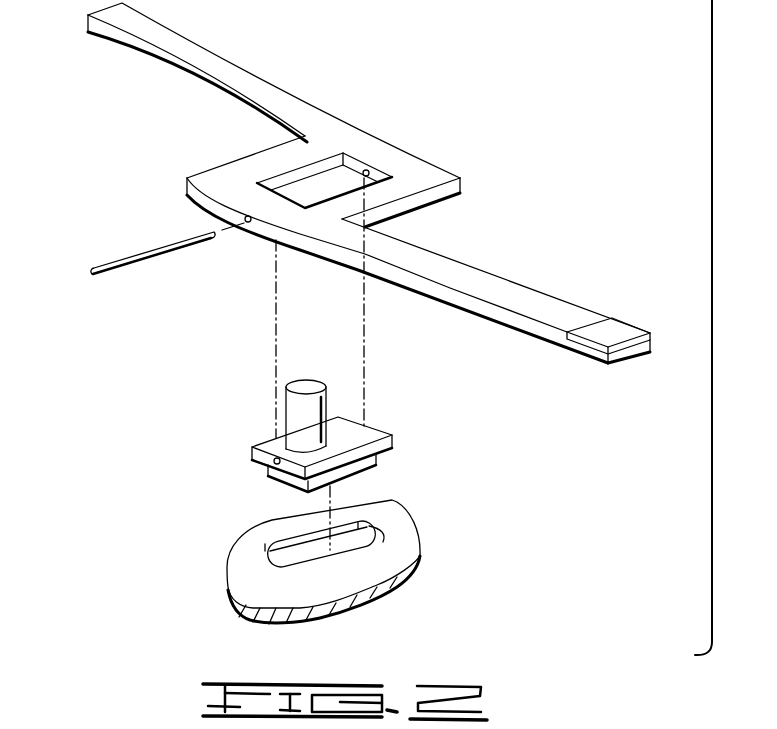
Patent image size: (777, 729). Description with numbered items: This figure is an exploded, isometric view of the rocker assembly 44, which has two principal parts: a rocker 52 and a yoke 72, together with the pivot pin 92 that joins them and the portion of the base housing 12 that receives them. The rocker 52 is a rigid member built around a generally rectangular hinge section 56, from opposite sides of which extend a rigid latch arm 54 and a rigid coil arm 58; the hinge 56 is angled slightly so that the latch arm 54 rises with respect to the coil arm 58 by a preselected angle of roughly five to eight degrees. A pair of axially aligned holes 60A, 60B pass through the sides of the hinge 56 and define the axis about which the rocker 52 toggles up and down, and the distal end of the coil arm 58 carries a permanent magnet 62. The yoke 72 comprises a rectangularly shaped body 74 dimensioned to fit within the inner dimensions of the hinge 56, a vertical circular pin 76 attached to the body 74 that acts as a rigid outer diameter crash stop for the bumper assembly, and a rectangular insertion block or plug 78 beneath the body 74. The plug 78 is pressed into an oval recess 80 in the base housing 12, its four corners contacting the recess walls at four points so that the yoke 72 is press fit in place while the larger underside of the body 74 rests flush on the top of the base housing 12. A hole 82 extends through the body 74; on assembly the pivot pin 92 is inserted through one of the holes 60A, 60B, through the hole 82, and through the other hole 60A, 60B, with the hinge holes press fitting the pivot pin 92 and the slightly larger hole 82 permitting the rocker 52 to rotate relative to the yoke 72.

The base housing 12 is at (252, 578).
The rocker assembly 44 is at (462, 103).
The rocker 52 is at (363, 166).
The latch arm 54 is at (232, 75).
The hinge section 56 is at (215, 180).
The coil arm 58 is at (527, 286).
The hole 60A is at (244, 236).
The hole 60B is at (369, 170).
The permanent magnet 62 is at (615, 333).
The yoke 72 is at (380, 421).
The body 74 is at (385, 433).
The pin 76 is at (284, 410).
The insertion block 78 is at (380, 464).
The oval recess 80 is at (272, 553).
The hole 82 is at (271, 461).
The pivot pin 92 is at (167, 248).